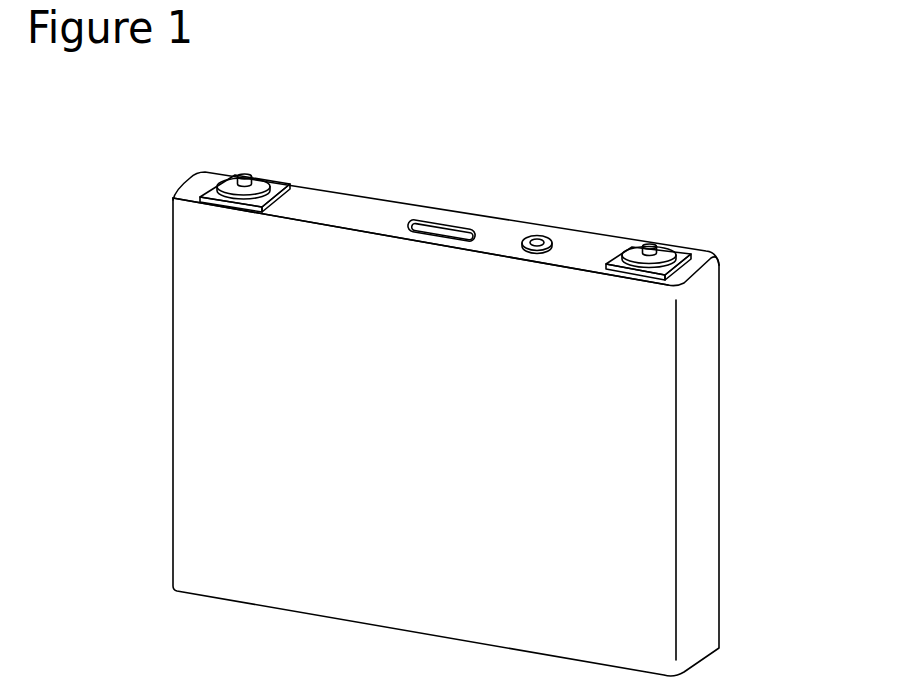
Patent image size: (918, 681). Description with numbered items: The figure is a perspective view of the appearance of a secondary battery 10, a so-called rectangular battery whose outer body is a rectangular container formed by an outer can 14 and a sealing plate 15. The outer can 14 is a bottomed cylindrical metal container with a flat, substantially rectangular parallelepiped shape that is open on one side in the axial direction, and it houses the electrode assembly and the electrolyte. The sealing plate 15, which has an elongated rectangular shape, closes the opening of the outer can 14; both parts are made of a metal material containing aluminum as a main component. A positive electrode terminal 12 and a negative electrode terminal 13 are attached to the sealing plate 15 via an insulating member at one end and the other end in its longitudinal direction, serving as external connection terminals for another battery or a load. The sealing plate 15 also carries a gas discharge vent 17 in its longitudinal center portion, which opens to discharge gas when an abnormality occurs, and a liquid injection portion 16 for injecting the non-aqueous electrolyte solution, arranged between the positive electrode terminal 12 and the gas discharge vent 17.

The secondary battery 10 is at (754, 145).
The positive electrode terminal 12 is at (648, 245).
The negative electrode terminal 13 is at (245, 172).
The outer can 14 is at (705, 395).
The sealing plate 15 is at (358, 212).
The liquid injection portion 16 is at (542, 236).
The gas discharge vent 17 is at (443, 228).